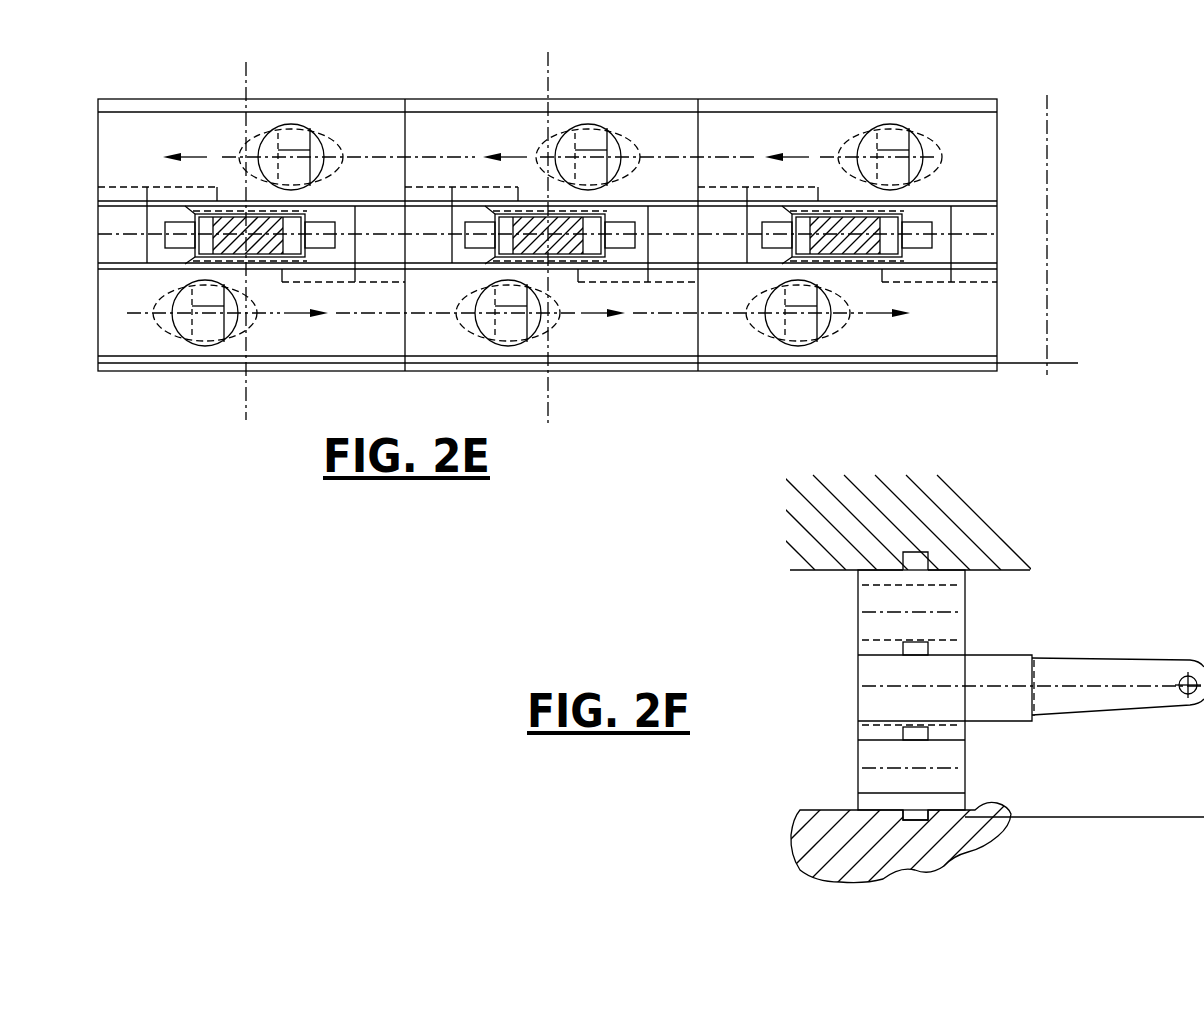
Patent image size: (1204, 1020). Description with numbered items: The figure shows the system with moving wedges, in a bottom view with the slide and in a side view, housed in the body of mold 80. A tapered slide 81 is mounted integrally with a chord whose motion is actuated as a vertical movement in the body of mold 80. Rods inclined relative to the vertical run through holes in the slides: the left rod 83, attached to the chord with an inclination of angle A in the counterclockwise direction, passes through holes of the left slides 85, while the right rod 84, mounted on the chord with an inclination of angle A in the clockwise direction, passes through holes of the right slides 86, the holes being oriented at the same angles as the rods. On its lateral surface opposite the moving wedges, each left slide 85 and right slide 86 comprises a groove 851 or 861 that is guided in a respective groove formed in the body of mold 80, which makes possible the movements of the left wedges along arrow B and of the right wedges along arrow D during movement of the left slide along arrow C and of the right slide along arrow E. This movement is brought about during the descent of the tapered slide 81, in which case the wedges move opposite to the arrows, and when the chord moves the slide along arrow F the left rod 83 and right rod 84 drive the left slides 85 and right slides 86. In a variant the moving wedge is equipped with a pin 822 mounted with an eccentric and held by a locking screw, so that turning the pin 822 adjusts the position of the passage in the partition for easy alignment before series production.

In FIG. 2F, the body of mold 80 is at (905, 685).
In FIG. 2E, the slide 81 is at (840, 223).
In FIG. 2E, the pin 822 is at (917, 230).
In FIG. 2E, the left rod 83 is at (797, 323).
In FIG. 2E, the right rod 84 is at (900, 167).
In FIG. 2F, the left slide 85 is at (952, 778).
In FIG. 2F, the groove 851 is at (922, 822).
In FIG. 2F, the right slide 86 is at (953, 577).
In FIG. 2F, the groove 861 is at (913, 552).